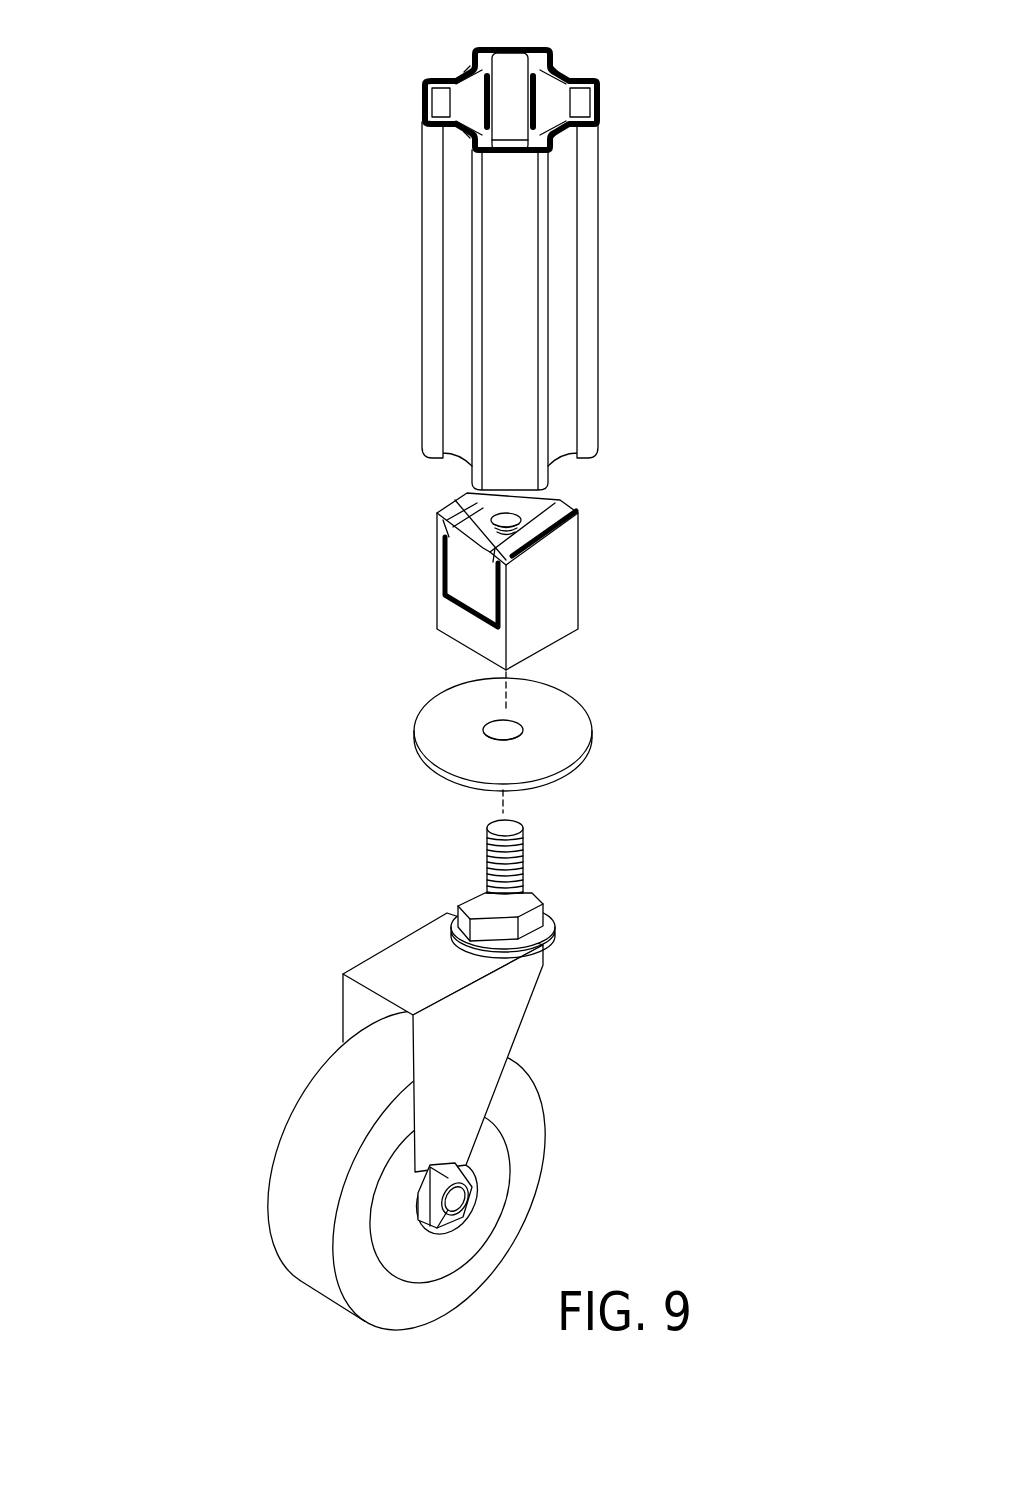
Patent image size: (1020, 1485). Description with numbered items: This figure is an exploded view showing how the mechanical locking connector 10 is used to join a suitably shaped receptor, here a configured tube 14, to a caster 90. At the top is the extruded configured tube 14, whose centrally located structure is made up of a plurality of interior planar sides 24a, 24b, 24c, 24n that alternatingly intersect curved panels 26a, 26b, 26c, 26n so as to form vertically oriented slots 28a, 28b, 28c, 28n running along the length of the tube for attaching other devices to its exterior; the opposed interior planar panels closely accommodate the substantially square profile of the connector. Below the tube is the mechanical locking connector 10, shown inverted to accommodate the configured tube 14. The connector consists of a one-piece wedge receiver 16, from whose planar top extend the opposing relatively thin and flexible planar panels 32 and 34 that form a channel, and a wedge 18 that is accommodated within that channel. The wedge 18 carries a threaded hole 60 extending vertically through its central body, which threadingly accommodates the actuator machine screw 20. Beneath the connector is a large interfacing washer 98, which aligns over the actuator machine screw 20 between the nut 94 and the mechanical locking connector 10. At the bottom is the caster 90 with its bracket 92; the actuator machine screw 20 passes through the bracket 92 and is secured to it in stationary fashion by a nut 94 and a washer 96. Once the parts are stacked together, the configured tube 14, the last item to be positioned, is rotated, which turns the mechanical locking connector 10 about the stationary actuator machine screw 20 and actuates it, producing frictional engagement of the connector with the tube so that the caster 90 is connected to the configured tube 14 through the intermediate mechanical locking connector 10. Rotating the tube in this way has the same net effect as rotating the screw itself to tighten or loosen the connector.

The mechanical locking connector 10 is at (492, 565).
The configured tube 14 is at (488, 248).
The wedge receiver 16 is at (580, 608).
The wedge 18 is at (526, 565).
The actuator machine screw 20 is at (542, 889).
The interior planar side 24a is at (477, 93).
The interior planar side 24b is at (543, 90).
The interior planar side 24c is at (547, 127).
The interior planar side 24n is at (462, 118).
The curved panel 26a is at (510, 50).
The curved panel 26b is at (593, 96).
The curved panel 26c is at (513, 157).
The curved panel 26n is at (428, 133).
The slot 28a is at (465, 66).
The slot 28b is at (565, 78).
The slot 28c is at (556, 152).
The slot 28n is at (453, 173).
The planar panel 32 is at (565, 572).
The planar panel 34 is at (436, 548).
The threaded hole 60 is at (470, 502).
The caster 90 is at (425, 1093).
The bracket 92 is at (440, 937).
The nut 94 is at (530, 913).
The washer 96 is at (548, 923).
The interfacing washer 98 is at (430, 728).